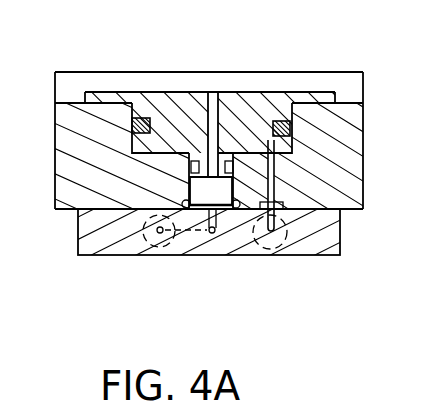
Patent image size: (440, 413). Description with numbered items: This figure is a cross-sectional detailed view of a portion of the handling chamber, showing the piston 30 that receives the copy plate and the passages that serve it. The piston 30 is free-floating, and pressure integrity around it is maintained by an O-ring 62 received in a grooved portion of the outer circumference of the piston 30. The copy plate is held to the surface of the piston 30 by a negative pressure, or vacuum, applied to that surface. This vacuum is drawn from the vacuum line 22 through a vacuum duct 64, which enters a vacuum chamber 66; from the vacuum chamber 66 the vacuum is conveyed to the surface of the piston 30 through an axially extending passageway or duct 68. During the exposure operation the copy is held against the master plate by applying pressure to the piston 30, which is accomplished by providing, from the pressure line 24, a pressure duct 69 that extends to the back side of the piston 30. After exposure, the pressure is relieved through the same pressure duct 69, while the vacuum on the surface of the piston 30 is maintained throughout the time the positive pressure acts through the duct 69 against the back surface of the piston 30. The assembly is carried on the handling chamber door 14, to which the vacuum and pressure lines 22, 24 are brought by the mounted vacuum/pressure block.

The handling chamber door 14 is at (347, 210).
The vacuum line 22 is at (167, 250).
The pressure line 24 is at (282, 240).
The piston 30 is at (264, 110).
The O-ring 62 is at (290, 133).
The vacuum duct 64 is at (213, 236).
The vacuum chamber 66 is at (196, 192).
The axially extending passageway or duct 68 is at (212, 121).
The pressure duct 69 is at (272, 189).